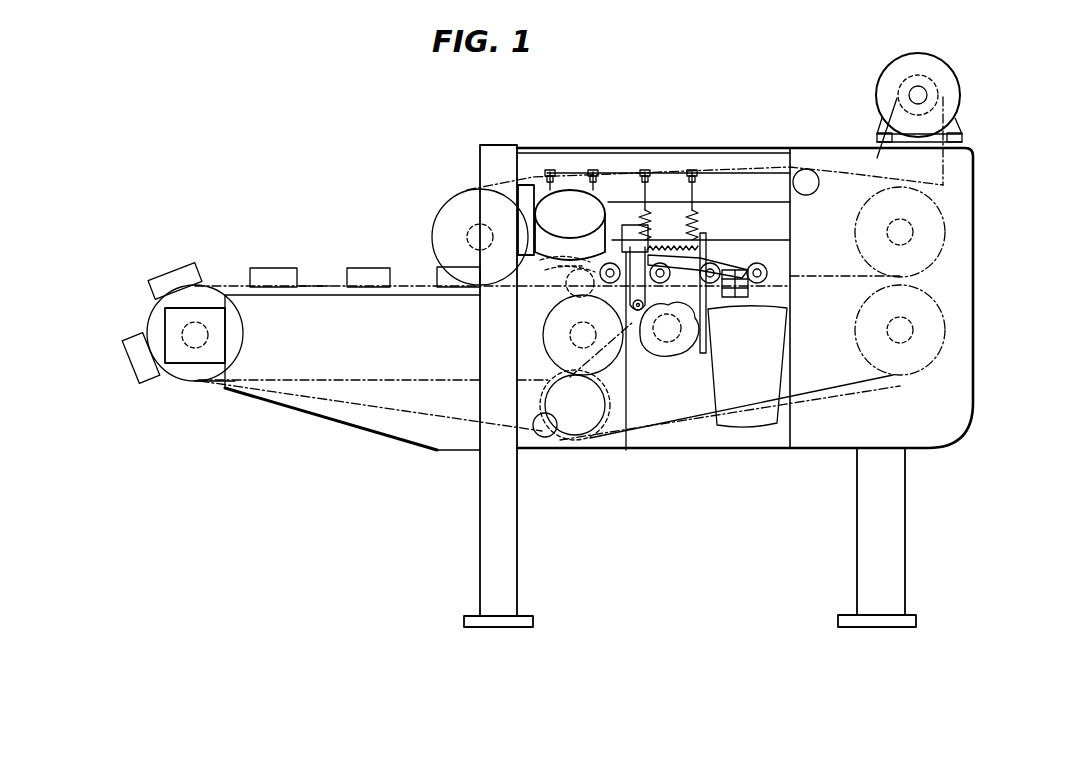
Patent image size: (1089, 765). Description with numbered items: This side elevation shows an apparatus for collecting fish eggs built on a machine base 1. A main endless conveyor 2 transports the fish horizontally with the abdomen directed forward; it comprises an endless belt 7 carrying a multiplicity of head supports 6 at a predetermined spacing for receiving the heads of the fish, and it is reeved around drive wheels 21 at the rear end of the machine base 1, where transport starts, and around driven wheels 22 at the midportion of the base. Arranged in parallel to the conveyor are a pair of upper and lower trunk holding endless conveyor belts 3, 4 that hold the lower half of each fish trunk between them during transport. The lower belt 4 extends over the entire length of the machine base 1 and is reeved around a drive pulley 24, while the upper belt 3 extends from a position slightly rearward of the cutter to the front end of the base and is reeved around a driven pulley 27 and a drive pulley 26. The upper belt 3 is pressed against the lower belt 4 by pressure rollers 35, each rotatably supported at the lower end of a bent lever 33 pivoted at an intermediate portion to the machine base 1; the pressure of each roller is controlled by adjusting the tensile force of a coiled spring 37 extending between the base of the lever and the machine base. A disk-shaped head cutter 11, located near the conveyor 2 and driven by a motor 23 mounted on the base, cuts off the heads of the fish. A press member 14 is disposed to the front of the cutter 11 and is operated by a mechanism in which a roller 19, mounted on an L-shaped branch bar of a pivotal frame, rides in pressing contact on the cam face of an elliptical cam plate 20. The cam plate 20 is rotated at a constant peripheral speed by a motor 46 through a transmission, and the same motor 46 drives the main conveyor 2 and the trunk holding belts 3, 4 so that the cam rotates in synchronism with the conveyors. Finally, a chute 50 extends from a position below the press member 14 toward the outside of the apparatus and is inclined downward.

The machine base 1 is at (742, 386).
The main endless conveyor 2 is at (456, 332).
The upper trunk holding endless conveyor belt 3 is at (705, 181).
The lower trunk holding endless conveyor belt 4 is at (736, 407).
The head supports 6 is at (365, 258).
The endless belt 7 is at (315, 256).
The head cutter 11 is at (514, 292).
The press member 14 is at (775, 313).
The roller 19 is at (538, 336).
The elliptical cam plate 20 is at (669, 352).
The drive wheels 21 is at (573, 337).
The driven wheels 22 is at (215, 413).
The motor 23 is at (564, 189).
The drive pulley 24 is at (941, 330).
The drive pulley 26 is at (963, 228).
The driven pulley 27 is at (478, 224).
The bent lever 33 is at (738, 223).
The pressure rollers 35 is at (716, 265).
The coiled spring 37 is at (642, 210).
The motor 46 is at (747, 269).
The chute 50 is at (747, 399).